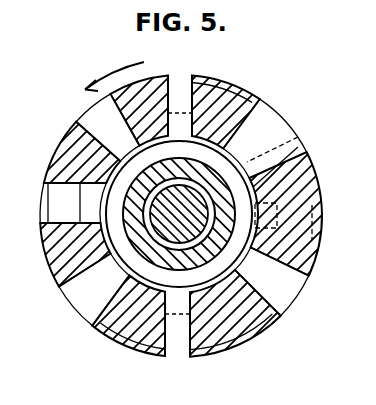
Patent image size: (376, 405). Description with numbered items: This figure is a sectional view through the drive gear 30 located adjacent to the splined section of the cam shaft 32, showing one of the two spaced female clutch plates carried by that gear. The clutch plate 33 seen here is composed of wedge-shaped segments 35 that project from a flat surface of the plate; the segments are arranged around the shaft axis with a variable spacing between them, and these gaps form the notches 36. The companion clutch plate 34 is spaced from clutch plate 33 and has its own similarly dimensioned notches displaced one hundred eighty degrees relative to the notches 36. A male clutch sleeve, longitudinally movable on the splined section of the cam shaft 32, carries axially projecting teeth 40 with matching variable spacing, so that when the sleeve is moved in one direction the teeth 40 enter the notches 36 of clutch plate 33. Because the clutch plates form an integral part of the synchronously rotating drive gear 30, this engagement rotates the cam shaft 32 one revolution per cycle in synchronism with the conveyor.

The drive gear 30 is at (210, 245).
The cam shaft 32 is at (77, 298).
The clutch plate 33 is at (62, 143).
The clutch plate 34 is at (278, 128).
The wedge-shaped segments 35 is at (246, 91).
The notches 36 is at (80, 120).
The teeth 40 is at (298, 137).